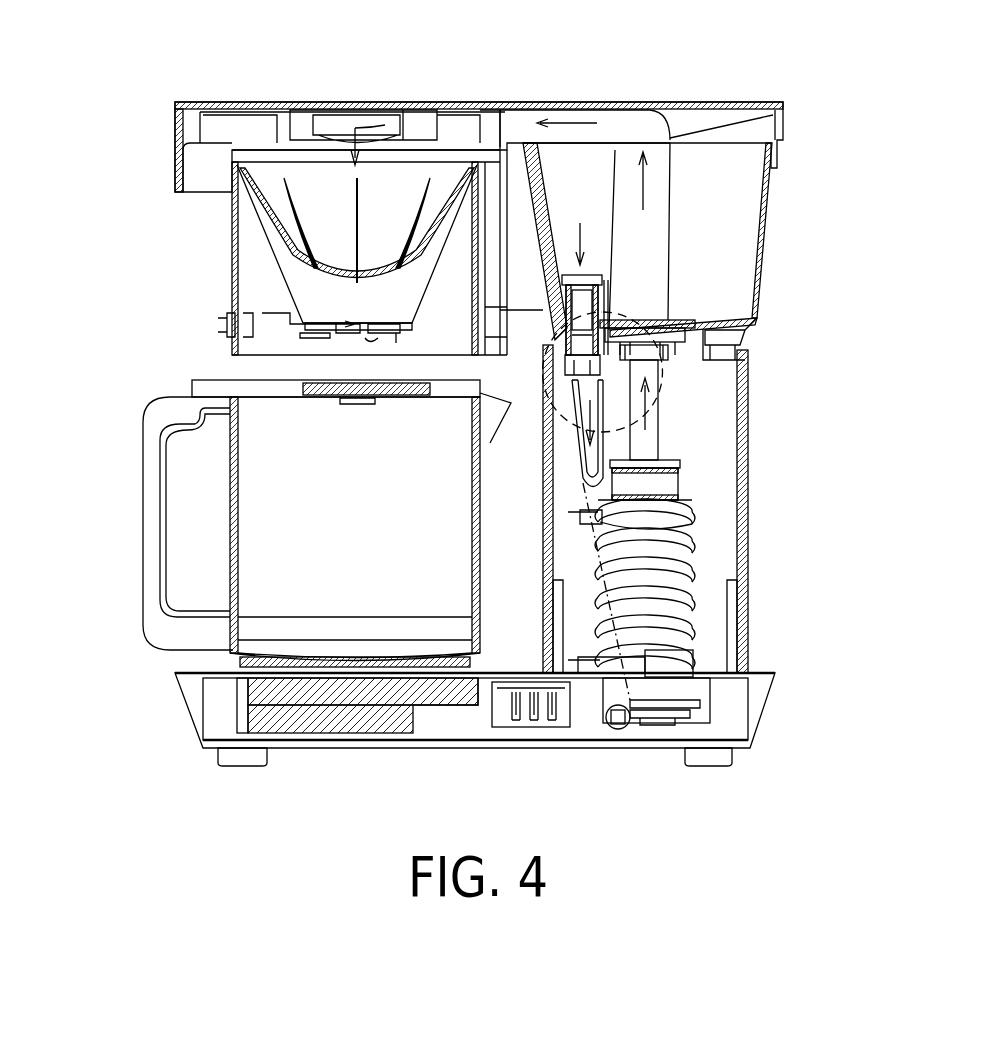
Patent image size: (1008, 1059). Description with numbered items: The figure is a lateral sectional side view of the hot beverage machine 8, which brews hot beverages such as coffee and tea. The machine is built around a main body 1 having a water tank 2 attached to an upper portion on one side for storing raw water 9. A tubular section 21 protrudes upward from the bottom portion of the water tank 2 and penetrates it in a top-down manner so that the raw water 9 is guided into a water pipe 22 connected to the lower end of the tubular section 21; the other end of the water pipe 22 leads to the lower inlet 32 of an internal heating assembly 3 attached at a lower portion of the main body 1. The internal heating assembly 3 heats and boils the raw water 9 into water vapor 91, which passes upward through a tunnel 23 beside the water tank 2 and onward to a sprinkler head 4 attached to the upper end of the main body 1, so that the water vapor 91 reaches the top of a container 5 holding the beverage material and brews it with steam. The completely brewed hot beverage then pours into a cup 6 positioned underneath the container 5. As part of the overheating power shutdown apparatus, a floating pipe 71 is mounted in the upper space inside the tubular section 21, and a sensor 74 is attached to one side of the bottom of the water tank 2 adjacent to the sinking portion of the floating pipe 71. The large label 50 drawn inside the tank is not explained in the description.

The main body 1 is at (750, 555).
The water tank 2 is at (742, 228).
The internal heating assembly 3 is at (673, 595).
The sprinkler head 4 is at (407, 108).
The container 5 is at (277, 210).
The cup 6 is at (280, 532).
The hot beverage machine 8 is at (200, 291).
The raw water 9 is at (587, 425).
The tubular section 21 is at (605, 290).
The water pipe 22 is at (607, 480).
The tunnel 23 is at (662, 183).
The lower inlet 32 is at (620, 730).
The flow passage 50 is at (661, 199).
The floating pipe 71 is at (612, 318).
The sensor 74 is at (615, 365).
The water vapor 91 is at (645, 415).